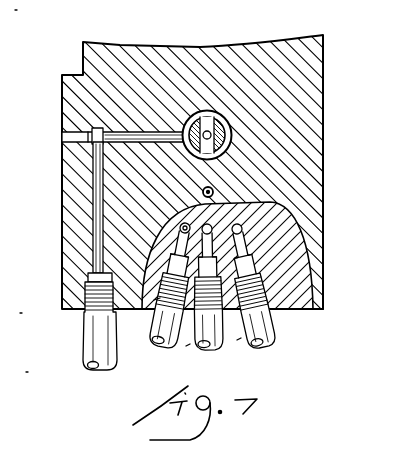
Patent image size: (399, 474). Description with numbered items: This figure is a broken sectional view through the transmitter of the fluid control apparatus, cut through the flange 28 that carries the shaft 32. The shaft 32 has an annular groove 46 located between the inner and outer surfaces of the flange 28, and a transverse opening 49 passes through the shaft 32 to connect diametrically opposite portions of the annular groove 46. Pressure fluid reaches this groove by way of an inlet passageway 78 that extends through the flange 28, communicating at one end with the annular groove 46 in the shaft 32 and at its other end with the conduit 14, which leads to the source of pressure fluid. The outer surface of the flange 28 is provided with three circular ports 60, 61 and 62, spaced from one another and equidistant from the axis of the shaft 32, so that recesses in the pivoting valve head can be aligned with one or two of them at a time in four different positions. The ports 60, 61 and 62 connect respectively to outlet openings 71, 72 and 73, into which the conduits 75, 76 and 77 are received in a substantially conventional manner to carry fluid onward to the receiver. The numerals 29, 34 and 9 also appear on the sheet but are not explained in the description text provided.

The flange 28 is at (87, 108).
The circular port 60 is at (270, 202).
The inlet passageway 78 is at (100, 231).
The annular groove 46 is at (230, 128).
The transverse opening 49 is at (200, 118).
The shaft 32 is at (214, 120).
The circular port 61 is at (228, 190).
The conduit 77 is at (165, 348).
The conduit 76 is at (218, 342).
The conduit 75 is at (277, 345).
The circular port 62 is at (183, 222).
The outlet opening 73 is at (154, 310).
The outlet opening 72 is at (192, 346).
The outlet opening 71 is at (238, 342).
The conduit 14 is at (97, 327).
The fitting 29 is at (11, 318).
The conduit 34 is at (14, 376).
The figure fragment 9 is at (9, 15).